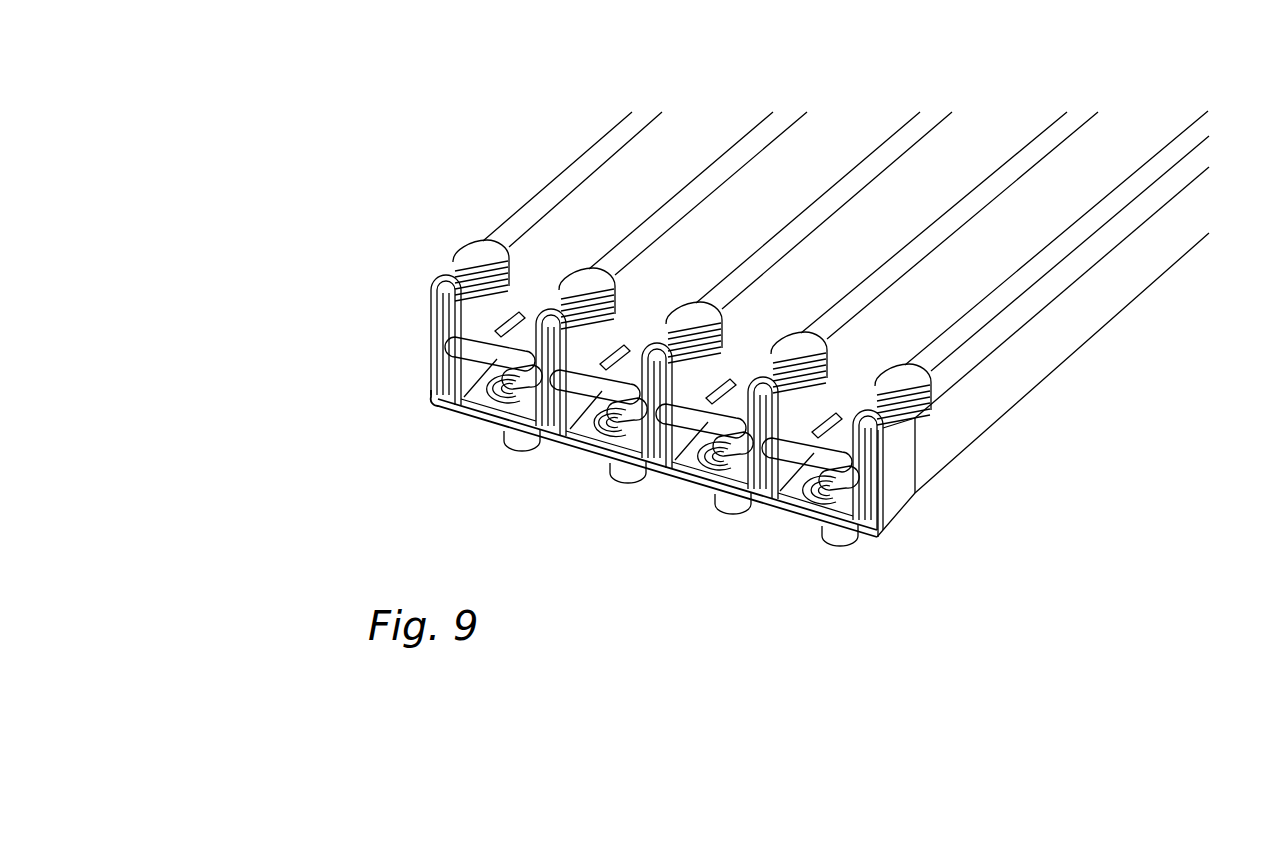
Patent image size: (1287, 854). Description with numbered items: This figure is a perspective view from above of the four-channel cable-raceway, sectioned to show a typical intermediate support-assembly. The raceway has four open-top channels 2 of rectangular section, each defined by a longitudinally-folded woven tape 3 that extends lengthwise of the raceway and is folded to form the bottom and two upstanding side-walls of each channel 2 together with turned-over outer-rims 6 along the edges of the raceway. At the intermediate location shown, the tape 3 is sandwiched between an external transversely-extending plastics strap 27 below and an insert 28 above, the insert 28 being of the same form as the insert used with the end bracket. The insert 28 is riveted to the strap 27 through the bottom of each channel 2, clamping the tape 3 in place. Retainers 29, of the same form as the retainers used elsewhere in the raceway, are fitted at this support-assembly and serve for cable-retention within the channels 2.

The open-top channel 2 is at (703, 150).
The longitudinally-folded tape 3 is at (1077, 336).
The turned-over outer-rim 6 is at (1182, 178).
The plastics strap 27 is at (895, 483).
The insert 28 is at (500, 258).
The retainer 29 is at (477, 353).